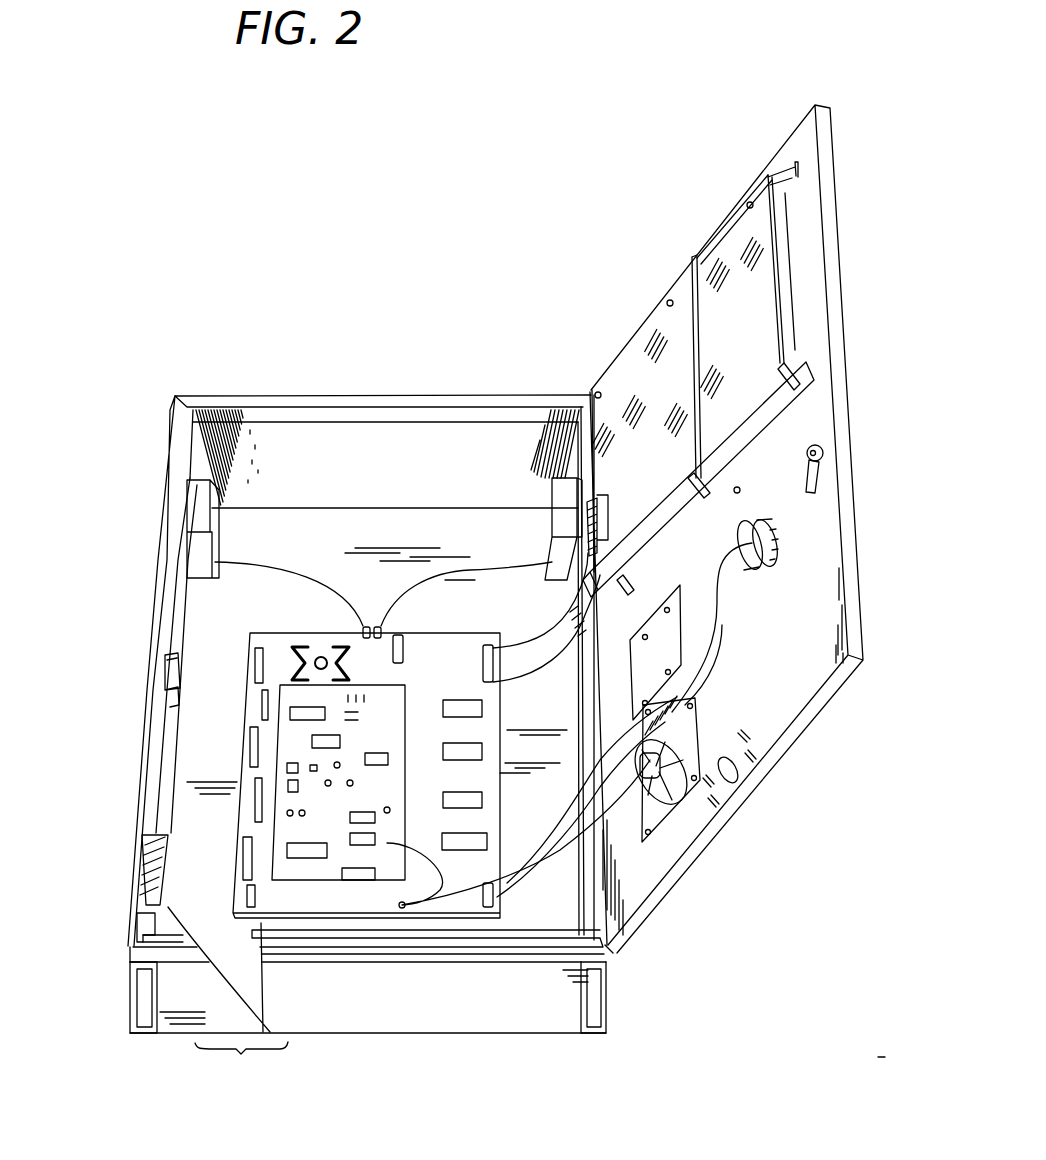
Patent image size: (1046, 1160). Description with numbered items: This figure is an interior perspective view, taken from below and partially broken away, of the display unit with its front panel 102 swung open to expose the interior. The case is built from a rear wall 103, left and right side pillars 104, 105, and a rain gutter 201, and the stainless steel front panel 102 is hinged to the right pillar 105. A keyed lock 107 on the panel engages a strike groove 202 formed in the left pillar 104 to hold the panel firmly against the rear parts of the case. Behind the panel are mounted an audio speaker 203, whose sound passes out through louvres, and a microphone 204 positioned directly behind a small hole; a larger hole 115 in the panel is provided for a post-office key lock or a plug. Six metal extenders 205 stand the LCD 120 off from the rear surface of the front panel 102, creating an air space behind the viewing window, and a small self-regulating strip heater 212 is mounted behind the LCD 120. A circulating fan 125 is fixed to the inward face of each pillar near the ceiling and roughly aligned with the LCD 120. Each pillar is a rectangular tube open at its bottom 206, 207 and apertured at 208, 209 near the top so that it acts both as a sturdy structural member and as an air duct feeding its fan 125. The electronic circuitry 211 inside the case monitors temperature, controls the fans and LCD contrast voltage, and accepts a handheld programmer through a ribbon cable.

The front panel 102 is at (793, 138).
The rear wall 103 is at (200, 610).
The left side pillar 104 is at (175, 753).
The right side pillar 105 is at (583, 902).
The keyed lock 107 is at (470, 1000).
The larger hole 115 is at (728, 768).
The LCD 120 is at (740, 218).
The circulating fan 125 is at (215, 527).
The rain gutter 201 is at (128, 939).
The strike groove 202 is at (185, 688).
The audio speaker 203 is at (672, 820).
The microphone 204 is at (746, 572).
The metal extenders 205 is at (800, 362).
The bottom opening of left pillar 206 is at (137, 996).
The bottom opening of right pillar 207 is at (612, 1003).
The fan aperture of left pillar 208 is at (196, 512).
The fan aperture of right pillar 209 is at (580, 477).
The electronic circuitry 211 is at (368, 898).
The strip heater 212 is at (730, 297).